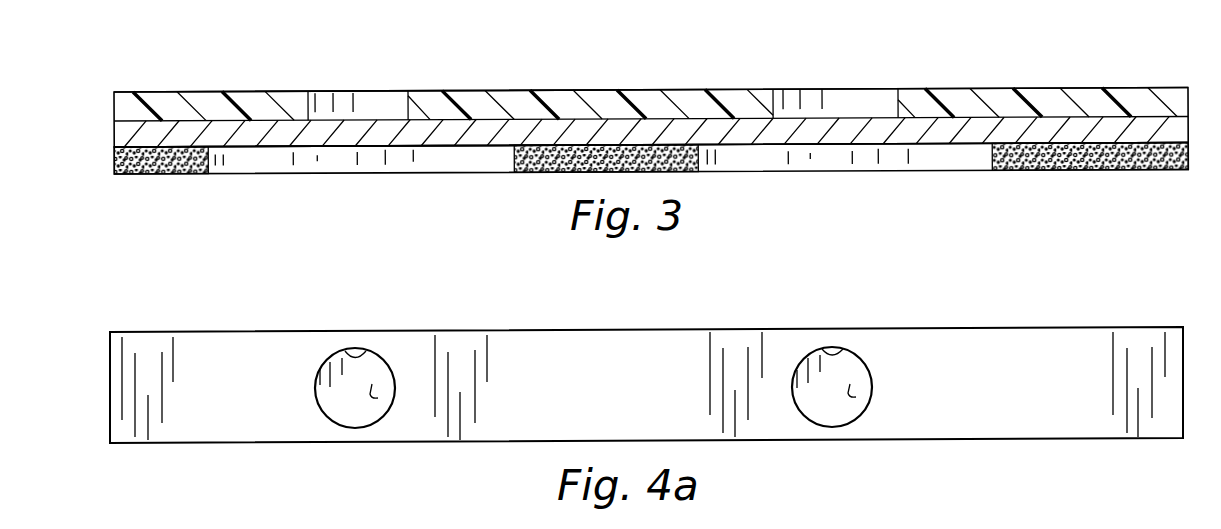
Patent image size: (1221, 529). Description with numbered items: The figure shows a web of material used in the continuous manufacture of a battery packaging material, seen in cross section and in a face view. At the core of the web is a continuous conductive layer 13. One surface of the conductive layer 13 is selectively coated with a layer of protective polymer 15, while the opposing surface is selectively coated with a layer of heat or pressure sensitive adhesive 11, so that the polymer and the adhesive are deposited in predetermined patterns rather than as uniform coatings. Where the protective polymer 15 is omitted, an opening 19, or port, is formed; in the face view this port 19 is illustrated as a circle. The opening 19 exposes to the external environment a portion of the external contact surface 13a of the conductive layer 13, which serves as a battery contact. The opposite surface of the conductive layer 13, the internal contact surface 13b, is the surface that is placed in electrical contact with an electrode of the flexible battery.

In FIG. 3, the heat or pressure sensitive adhesive 11 is at (113, 163).
In FIG. 3, the conductive layer 13 is at (640, 115).
In FIG. 3, the external contact surface 13a is at (360, 118).
In FIG. 4A, the external contact surface 13a is at (372, 390).
In FIG. 3, the internal contact surface 13b is at (337, 148).
In FIG. 3, the protective polymer 15 is at (1135, 93).
In FIG. 3, the opening 19 is at (332, 96).
In FIG. 4A, the opening 19 is at (348, 350).